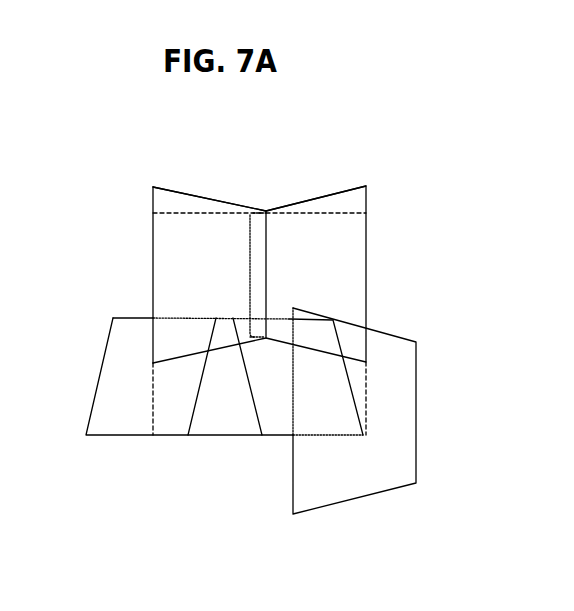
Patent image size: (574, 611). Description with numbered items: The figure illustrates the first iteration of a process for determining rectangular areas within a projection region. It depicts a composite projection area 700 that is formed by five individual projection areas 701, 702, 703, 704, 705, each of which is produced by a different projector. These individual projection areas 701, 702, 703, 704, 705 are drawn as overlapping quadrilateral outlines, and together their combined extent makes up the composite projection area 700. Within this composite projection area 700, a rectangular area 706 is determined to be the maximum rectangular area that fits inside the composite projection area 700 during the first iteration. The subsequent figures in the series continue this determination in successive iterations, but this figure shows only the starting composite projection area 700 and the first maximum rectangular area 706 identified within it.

The composite projection area 700 is at (287, 178).
The individual projection area 701 is at (355, 200).
The individual projection area 702 is at (167, 200).
The individual projection area 703 is at (405, 368).
The individual projection area 704 is at (117, 352).
The individual projection area 705 is at (278, 423).
The rectangular area 706 is at (153, 268).